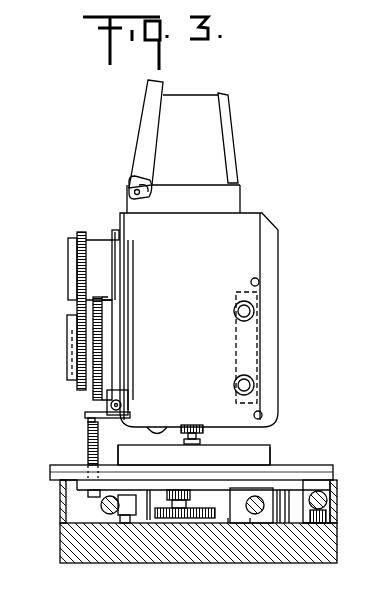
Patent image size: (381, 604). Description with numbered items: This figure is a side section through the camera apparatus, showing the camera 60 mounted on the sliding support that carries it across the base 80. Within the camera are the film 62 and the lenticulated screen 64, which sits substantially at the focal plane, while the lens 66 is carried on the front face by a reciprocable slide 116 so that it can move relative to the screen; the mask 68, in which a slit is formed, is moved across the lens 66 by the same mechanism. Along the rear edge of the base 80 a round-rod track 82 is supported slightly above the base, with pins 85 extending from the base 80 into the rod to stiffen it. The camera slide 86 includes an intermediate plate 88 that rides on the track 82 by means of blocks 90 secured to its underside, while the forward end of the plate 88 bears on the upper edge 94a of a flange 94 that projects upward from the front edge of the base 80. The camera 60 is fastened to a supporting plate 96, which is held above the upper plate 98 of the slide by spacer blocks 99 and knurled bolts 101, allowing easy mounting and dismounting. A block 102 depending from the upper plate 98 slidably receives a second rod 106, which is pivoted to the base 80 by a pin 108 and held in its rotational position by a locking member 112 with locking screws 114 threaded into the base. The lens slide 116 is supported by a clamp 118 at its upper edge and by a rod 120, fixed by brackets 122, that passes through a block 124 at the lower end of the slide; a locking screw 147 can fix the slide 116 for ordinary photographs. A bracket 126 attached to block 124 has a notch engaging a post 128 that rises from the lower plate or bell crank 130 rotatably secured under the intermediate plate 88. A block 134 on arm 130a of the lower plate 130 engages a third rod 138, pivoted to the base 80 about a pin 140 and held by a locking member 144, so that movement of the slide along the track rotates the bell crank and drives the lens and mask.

The camera 60 is at (253, 214).
The film 62 is at (260, 370).
The lenticulated screen 64 is at (260, 345).
The lens 66 is at (70, 355).
The mask 68 is at (67, 320).
The base 80 is at (335, 548).
The track 82 is at (328, 500).
The pins 85 is at (310, 523).
The camera slide 86 is at (303, 452).
The intermediate plate 88 is at (55, 477).
The blocks 90 is at (333, 483).
The flange 94 is at (62, 523).
The upper edge 94a is at (62, 490).
The supporting plate 96 is at (128, 455).
The upper plate 98 is at (62, 466).
The spacer blocks 99 is at (262, 452).
The knurled bolts 101 is at (193, 425).
The block 102 is at (127, 523).
The second track or rod 106 is at (101, 505).
The pin 108 is at (92, 497).
The locking member 112 is at (170, 519).
The locking screws 114 is at (203, 519).
The reciprocable slide 116 is at (125, 320).
The clamp 118 is at (116, 230).
The rod 120 is at (122, 405).
The brackets 122 is at (122, 397).
The block 124 is at (108, 392).
The bracket 126 is at (88, 413).
The post 128 is at (88, 433).
The lower plate or bell crank 130 is at (161, 458).
The arm 130a is at (243, 476).
The block 134 is at (240, 522).
The third track or rod 138 is at (268, 522).
The pin 140 is at (252, 522).
The locking member 144 is at (227, 522).
The locking screw 147 is at (112, 234).